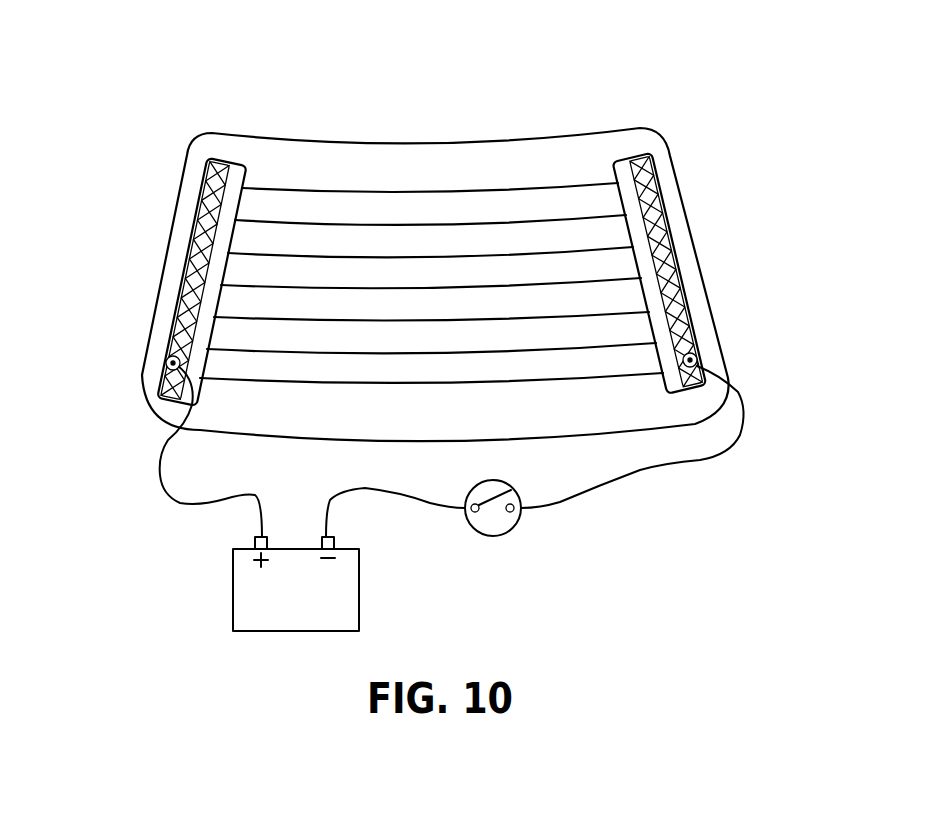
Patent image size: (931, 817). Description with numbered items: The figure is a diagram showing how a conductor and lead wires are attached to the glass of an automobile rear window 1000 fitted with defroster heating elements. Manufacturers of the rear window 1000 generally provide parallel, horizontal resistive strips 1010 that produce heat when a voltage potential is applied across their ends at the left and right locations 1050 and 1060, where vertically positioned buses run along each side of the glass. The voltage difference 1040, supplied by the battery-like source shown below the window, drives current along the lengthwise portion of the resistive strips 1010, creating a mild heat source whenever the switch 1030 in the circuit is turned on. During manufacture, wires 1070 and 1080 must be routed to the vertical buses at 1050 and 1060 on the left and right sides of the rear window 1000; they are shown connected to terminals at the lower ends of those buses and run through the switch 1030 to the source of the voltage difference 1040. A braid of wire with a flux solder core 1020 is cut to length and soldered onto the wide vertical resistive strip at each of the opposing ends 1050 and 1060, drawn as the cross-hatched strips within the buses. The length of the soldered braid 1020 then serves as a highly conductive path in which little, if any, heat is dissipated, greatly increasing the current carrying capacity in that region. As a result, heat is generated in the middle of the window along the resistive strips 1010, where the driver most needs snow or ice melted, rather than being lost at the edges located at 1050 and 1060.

The rear window 1000 is at (432, 127).
The resistive strips 1010 is at (485, 192).
The braid of wire with flux solder core 1020 is at (190, 283).
The switch 1030 is at (517, 527).
The voltage difference 1040 is at (331, 614).
The left end location (vertical bus) 1050 is at (224, 155).
The right end location (vertical bus) 1060 is at (637, 152).
The wire 1070 is at (165, 372).
The wire 1080 is at (707, 357).